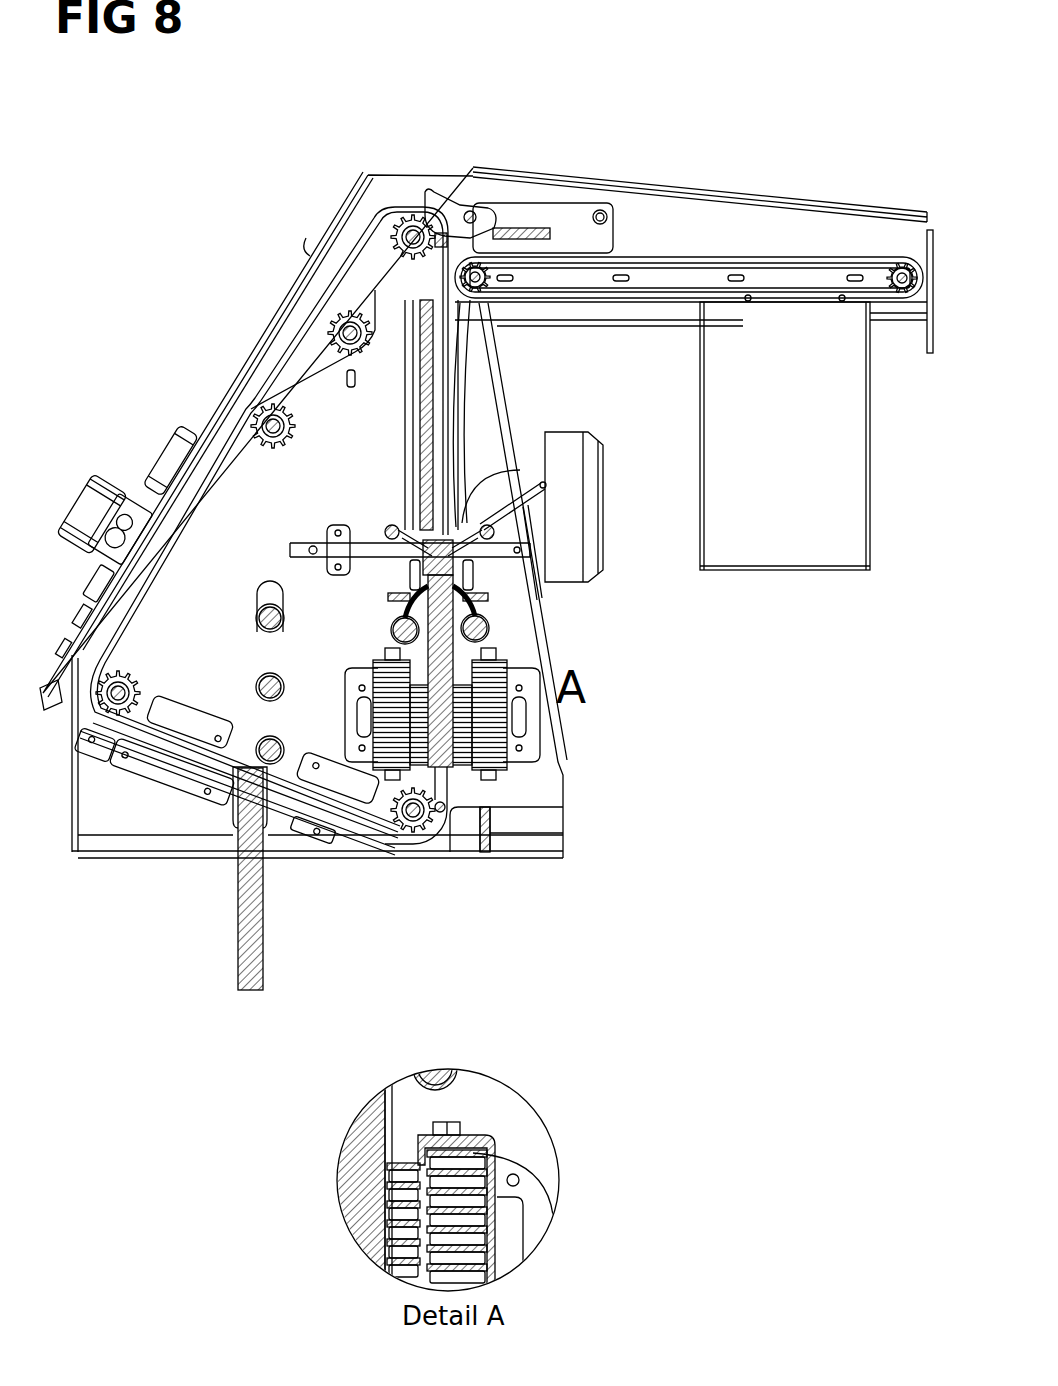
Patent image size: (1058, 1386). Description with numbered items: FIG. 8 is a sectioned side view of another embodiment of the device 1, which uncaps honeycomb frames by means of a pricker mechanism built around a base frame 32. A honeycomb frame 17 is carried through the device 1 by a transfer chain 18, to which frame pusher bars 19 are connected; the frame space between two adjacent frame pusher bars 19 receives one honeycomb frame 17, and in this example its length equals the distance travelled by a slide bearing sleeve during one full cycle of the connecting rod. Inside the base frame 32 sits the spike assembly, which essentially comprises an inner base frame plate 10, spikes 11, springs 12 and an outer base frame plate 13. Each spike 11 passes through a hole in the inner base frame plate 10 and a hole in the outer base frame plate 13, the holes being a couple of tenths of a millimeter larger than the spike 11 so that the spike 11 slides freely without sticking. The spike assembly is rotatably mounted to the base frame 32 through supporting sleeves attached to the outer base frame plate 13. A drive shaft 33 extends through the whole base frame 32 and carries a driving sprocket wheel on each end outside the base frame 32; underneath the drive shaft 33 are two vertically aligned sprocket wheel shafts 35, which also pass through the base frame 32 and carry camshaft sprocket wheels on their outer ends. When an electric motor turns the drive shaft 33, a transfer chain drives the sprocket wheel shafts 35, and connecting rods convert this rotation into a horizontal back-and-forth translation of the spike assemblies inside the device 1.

The device 1 is at (67, 155).
The inner base frame plate 10 is at (468, 1130).
The spike 11 is at (490, 1175).
The spring 12 is at (519, 1180).
The outer base frame plate 13 is at (487, 1132).
The honeycomb frame 17 is at (492, 634).
The transfer chain 18 is at (443, 860).
The frame pusher bar 19 is at (487, 545).
The base frame 32 is at (550, 817).
The drive shaft 33 is at (260, 632).
The sprocket wheel shaft 35 is at (263, 698).